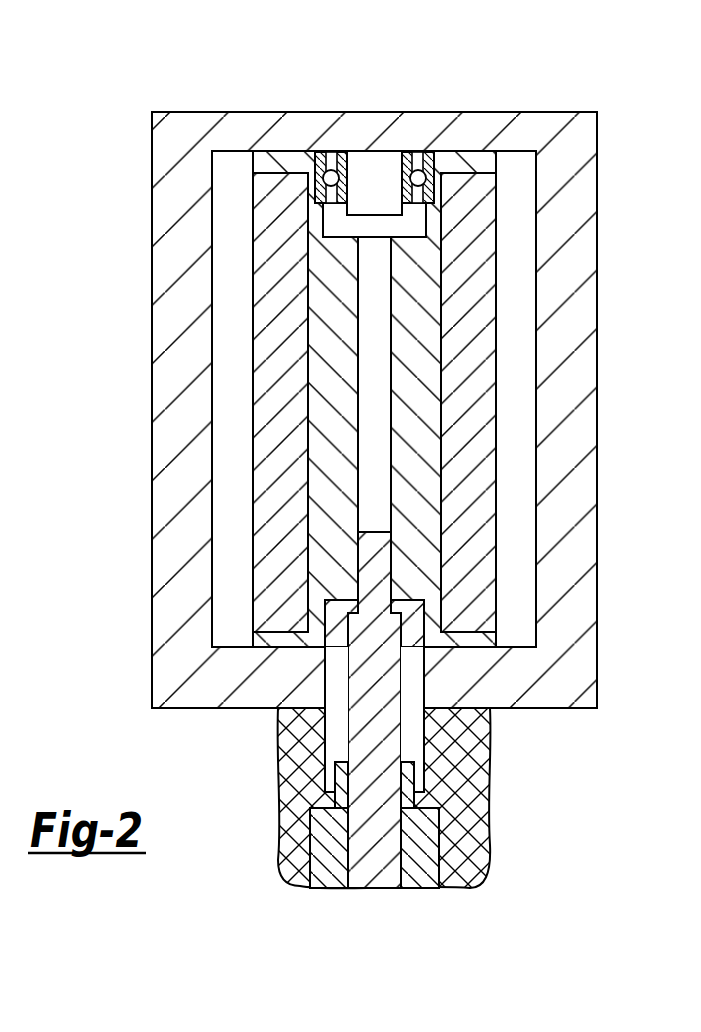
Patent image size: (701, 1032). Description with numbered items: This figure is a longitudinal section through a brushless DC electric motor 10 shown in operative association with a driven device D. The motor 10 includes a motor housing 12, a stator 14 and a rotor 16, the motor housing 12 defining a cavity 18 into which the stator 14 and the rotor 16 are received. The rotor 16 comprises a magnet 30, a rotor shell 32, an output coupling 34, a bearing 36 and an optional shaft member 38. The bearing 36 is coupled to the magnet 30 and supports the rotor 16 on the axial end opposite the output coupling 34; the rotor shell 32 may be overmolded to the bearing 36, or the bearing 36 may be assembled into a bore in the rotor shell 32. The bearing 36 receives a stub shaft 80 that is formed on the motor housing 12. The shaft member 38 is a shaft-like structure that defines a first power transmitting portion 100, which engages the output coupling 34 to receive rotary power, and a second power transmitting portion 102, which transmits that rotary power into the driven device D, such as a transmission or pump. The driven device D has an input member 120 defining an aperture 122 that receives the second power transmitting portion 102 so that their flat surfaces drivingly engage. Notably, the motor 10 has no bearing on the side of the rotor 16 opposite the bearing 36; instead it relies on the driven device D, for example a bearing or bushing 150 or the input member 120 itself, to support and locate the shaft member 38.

The brushless DC electric motor 10 is at (600, 67).
The motor housing 12 is at (583, 370).
The stator 14 is at (232, 362).
The rotor 16 is at (272, 467).
The cavity 18 is at (213, 622).
The magnet 30 is at (268, 280).
The rotor shell 32 is at (487, 165).
The output coupling 34 is at (424, 633).
The bearing 36 is at (418, 172).
The shaft member 38 is at (369, 870).
The stub shaft 80 is at (358, 175).
The first power transmitting portion 100 is at (363, 622).
The second power transmitting portion 102 is at (380, 828).
The input member 120 is at (320, 862).
The aperture 122 is at (405, 867).
The bearing or bushing 150 is at (338, 772).
The driven device D is at (490, 760).